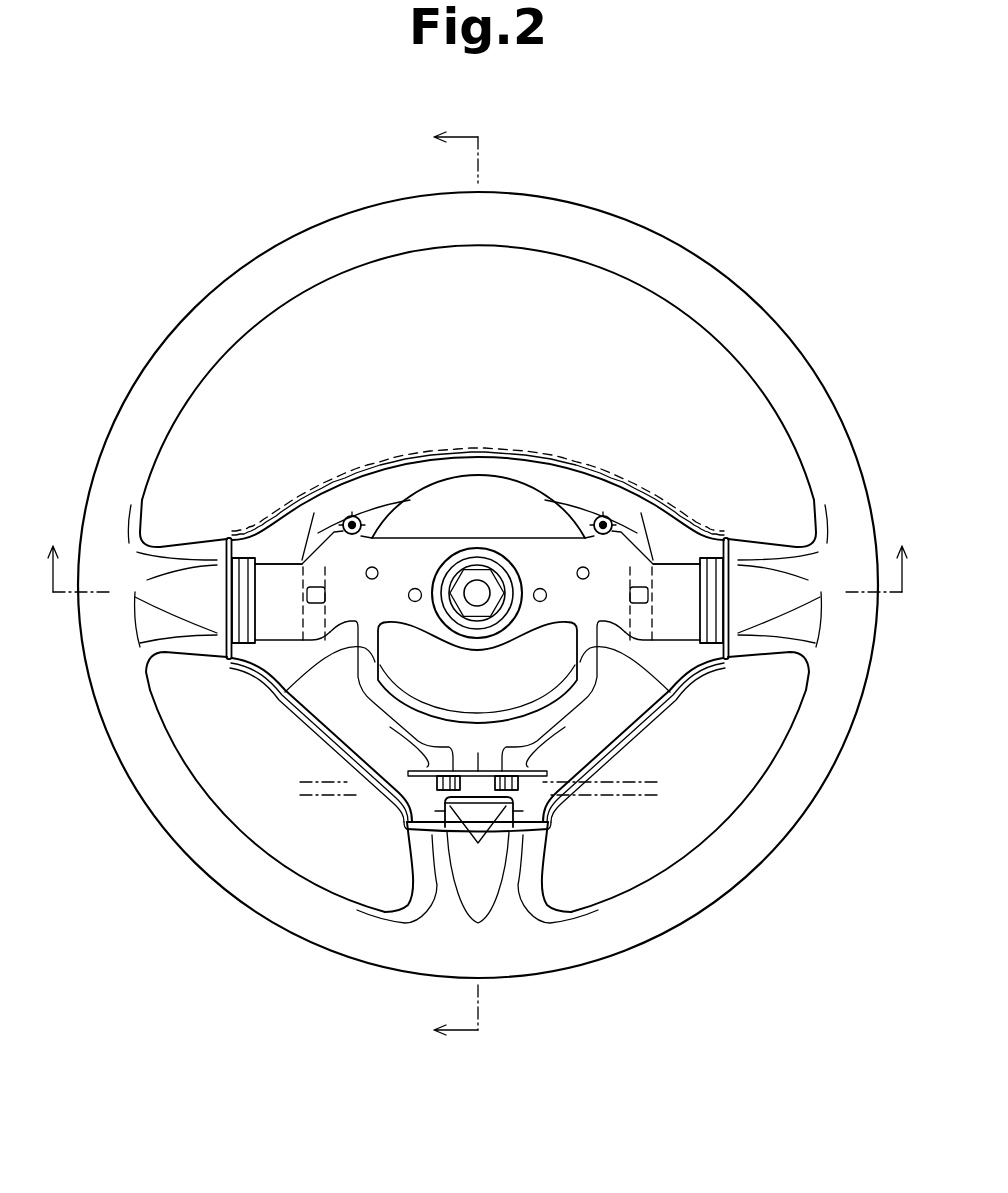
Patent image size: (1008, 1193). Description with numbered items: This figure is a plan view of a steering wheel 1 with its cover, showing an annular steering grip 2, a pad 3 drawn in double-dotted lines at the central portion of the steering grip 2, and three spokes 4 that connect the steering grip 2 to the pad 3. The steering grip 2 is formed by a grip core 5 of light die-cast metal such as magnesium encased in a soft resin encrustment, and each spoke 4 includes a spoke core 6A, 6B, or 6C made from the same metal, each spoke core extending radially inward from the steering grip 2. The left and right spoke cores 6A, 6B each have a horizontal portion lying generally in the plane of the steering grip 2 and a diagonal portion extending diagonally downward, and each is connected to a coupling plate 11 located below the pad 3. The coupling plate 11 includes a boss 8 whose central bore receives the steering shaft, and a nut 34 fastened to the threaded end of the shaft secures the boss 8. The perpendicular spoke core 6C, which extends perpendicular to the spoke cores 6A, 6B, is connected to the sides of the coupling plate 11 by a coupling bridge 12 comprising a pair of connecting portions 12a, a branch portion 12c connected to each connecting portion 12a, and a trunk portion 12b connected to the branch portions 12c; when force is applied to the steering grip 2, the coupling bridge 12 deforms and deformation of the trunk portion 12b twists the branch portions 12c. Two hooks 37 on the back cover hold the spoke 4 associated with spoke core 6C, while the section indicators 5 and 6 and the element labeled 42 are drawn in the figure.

The steering wheel 1 is at (712, 208).
The steering grip 2 is at (745, 292).
The pad 3 is at (538, 452).
The spoke 4 is at (210, 550).
The grip core 5 is at (305, 808).
The section line 6- 6 is at (305, 753).
The spoke core 6A is at (278, 573).
The spoke core 6B is at (683, 572).
The spoke core 6C is at (490, 760).
The boss 8 is at (477, 548).
The coupling plate 11 is at (522, 548).
The coupling bridge 12 is at (394, 738).
The connecting portion 12a is at (287, 690).
The trunk portion 12b is at (468, 733).
The branch portion 12c is at (397, 707).
The nut 34 is at (447, 580).
The hook 37 is at (480, 832).
The fastening member 42 is at (408, 820).